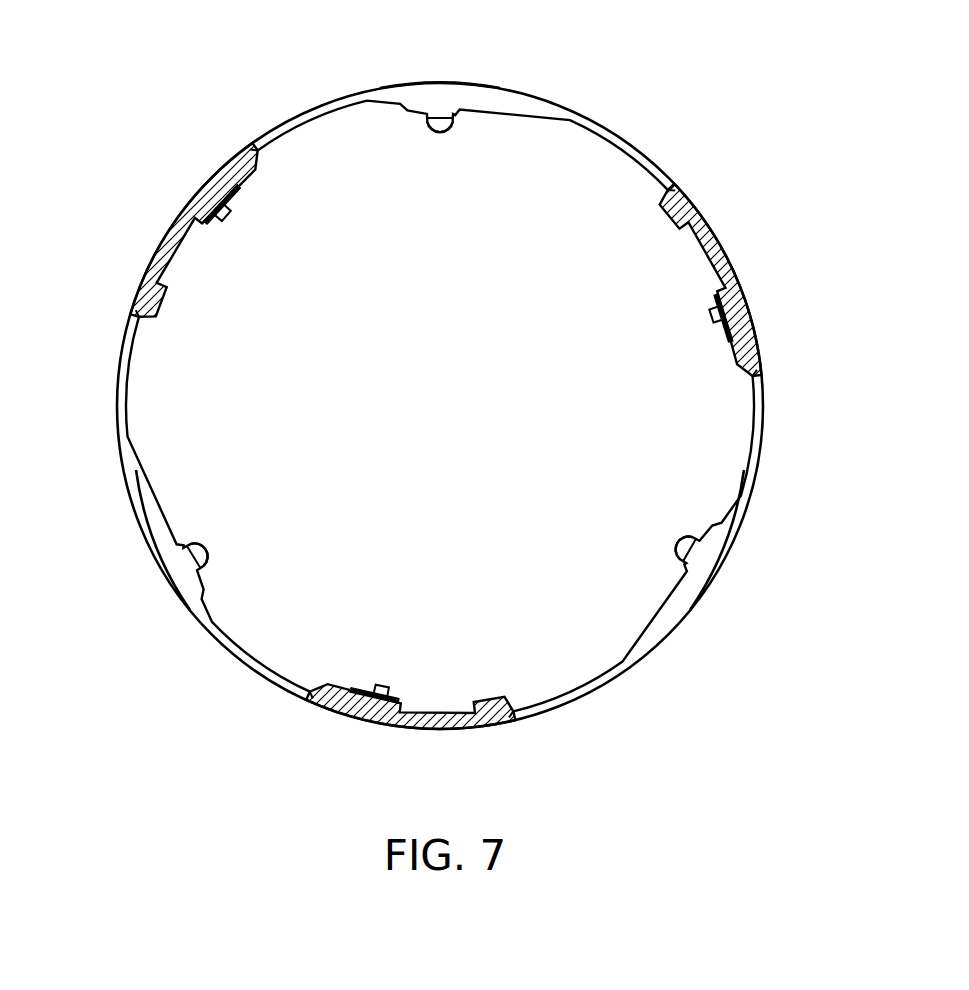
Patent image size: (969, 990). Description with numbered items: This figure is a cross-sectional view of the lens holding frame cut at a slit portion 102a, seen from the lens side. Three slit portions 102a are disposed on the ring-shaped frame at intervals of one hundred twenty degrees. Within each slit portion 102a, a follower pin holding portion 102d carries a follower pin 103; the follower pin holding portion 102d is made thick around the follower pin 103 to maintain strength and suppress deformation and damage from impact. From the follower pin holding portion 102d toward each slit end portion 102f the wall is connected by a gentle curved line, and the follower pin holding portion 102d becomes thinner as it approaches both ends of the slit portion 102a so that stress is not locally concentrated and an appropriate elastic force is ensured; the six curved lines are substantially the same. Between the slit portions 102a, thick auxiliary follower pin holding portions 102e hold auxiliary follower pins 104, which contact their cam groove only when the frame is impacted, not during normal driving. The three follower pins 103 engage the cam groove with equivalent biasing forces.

The slit portion 102a is at (653, 192).
The follower pin holding portion 102d is at (418, 92).
The auxiliary follower pin holding portion 102e is at (210, 200).
The slit end portion 102f is at (258, 150).
The follower pin 103 is at (440, 114).
The auxiliary follower pin 104 is at (222, 224).